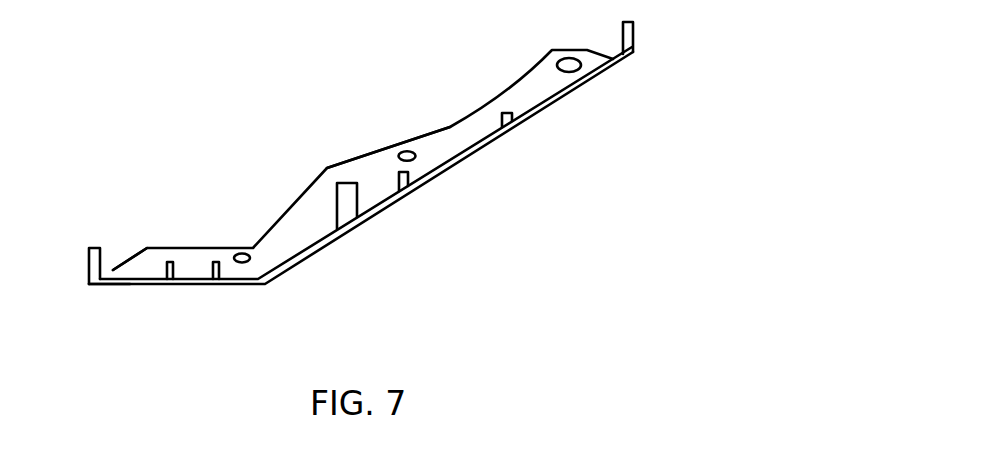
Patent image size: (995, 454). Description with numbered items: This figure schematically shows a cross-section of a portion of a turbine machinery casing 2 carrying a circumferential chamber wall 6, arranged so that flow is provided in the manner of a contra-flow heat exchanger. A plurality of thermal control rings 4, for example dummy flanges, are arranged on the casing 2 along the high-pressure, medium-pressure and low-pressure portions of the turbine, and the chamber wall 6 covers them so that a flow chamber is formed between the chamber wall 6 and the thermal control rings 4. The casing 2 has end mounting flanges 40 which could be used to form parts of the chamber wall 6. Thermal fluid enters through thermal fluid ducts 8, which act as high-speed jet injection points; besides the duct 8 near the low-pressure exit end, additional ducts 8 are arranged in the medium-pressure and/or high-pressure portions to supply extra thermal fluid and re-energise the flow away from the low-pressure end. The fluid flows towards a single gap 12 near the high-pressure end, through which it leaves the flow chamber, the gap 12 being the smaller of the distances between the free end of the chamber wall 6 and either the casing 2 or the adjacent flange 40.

The casing 2 is at (130, 285).
The thermal control rings 4 is at (172, 268).
The circumferential chamber wall 6 is at (345, 161).
The thermal fluid duct 8 is at (240, 252).
The gap 12 is at (111, 268).
The end mounting flanges 40 is at (88, 262).